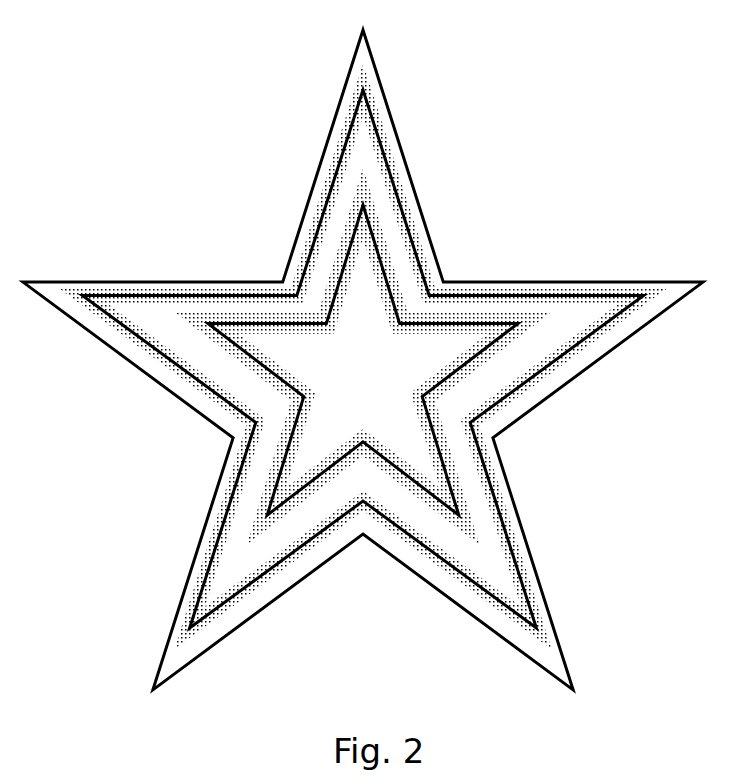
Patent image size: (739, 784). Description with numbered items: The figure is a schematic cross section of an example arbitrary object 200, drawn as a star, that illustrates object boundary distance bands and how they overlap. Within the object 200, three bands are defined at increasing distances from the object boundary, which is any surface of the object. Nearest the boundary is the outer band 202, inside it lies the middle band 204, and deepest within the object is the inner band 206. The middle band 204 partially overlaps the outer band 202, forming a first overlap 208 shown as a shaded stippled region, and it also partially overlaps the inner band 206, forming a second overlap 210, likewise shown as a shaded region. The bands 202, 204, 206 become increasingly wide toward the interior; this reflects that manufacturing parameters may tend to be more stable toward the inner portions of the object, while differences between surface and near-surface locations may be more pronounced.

The arbitrary object 200 is at (363, 360).
The outer band 202 is at (407, 134).
The middle band 204 is at (402, 219).
The inner band 206 is at (403, 398).
The first overlap 208 is at (409, 186).
The second overlap 210 is at (405, 268).